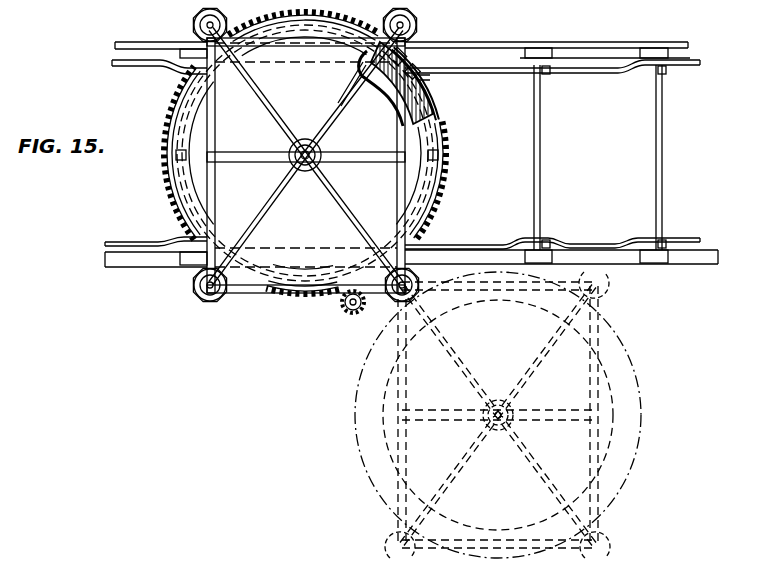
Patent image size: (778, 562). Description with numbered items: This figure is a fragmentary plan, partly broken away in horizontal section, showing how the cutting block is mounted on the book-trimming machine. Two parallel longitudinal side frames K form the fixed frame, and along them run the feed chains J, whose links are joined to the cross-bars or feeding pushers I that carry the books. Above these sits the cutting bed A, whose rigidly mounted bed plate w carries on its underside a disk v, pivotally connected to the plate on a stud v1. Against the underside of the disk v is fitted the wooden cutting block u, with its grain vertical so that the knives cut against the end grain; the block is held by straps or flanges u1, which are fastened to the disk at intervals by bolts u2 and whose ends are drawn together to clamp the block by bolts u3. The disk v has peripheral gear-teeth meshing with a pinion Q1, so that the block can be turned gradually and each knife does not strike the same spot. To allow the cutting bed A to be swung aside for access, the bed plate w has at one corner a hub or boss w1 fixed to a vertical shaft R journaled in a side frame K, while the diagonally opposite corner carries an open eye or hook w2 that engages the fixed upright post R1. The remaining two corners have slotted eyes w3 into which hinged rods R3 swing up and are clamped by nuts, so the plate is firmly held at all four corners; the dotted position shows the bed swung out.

The fixed upright shaft or post R1 is at (197, 26).
The vertical shaft R is at (400, 21).
The pivoted rods or bars R3 is at (208, 298).
The bed plate w is at (306, 161).
The hub or boss w1 is at (398, 300).
The open eye or hook w2 is at (224, 18).
The open or slotted eyes w3 is at (418, 22).
The disk v is at (443, 185).
The stud v1 is at (313, 155).
The cutting block u is at (437, 110).
The straps or flanges u1 is at (428, 105).
The bolts u2 is at (177, 156).
The bolts u3 is at (417, 70).
The cutting bed A is at (223, 104).
The cross-bars or feeding pushers I is at (598, 157).
The chains J is at (590, 65).
The side frames K is at (676, 240).
The pinion Q1 is at (351, 309).